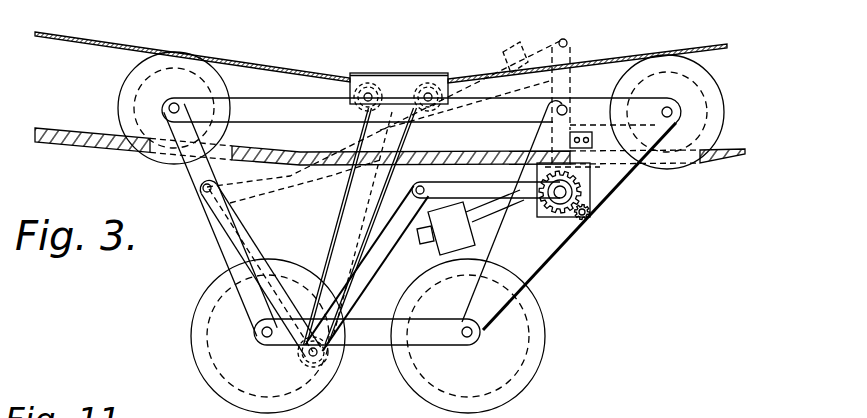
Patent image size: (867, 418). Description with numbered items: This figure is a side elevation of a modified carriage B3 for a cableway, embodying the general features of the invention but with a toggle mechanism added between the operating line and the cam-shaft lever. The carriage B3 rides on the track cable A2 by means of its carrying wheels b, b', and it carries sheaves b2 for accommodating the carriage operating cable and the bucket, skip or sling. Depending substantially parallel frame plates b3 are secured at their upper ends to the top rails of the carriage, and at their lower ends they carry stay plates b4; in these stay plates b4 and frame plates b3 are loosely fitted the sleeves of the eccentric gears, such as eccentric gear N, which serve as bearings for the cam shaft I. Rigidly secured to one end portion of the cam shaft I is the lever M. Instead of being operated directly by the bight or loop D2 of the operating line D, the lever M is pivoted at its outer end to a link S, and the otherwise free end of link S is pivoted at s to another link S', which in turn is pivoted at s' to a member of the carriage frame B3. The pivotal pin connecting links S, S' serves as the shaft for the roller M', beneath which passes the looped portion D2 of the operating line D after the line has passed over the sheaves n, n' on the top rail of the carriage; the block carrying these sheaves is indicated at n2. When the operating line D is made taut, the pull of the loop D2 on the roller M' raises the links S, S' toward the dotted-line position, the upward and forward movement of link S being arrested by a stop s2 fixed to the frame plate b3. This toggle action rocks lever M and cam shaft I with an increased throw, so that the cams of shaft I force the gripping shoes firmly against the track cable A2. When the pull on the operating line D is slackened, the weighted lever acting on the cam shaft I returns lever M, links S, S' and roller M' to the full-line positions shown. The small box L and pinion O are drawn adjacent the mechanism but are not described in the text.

The carrying wheel b is at (672, 112).
The carrying wheel b' is at (148, 108).
The sheave b2 is at (203, 367).
The frame plate b3 is at (556, 242).
The stay plate b4 is at (592, 183).
The sheave n is at (347, 115).
The sheave n' is at (446, 115).
The pulley block n2 is at (400, 77).
The pivot s is at (299, 359).
The pivot s' is at (181, 193).
The stop s2 is at (590, 132).
The link S is at (368, 268).
The link S' is at (260, 268).
The operating line D is at (618, 57).
The bight or loop D2 is at (347, 212).
The carriage B3 is at (220, 237).
The lever M is at (486, 179).
The roller M' is at (367, 357).
The box L is at (430, 247).
The cam shaft I is at (502, 233).
The eccentric gear N is at (503, 240).
The pinion O is at (587, 213).
The track cable A2 is at (723, 157).